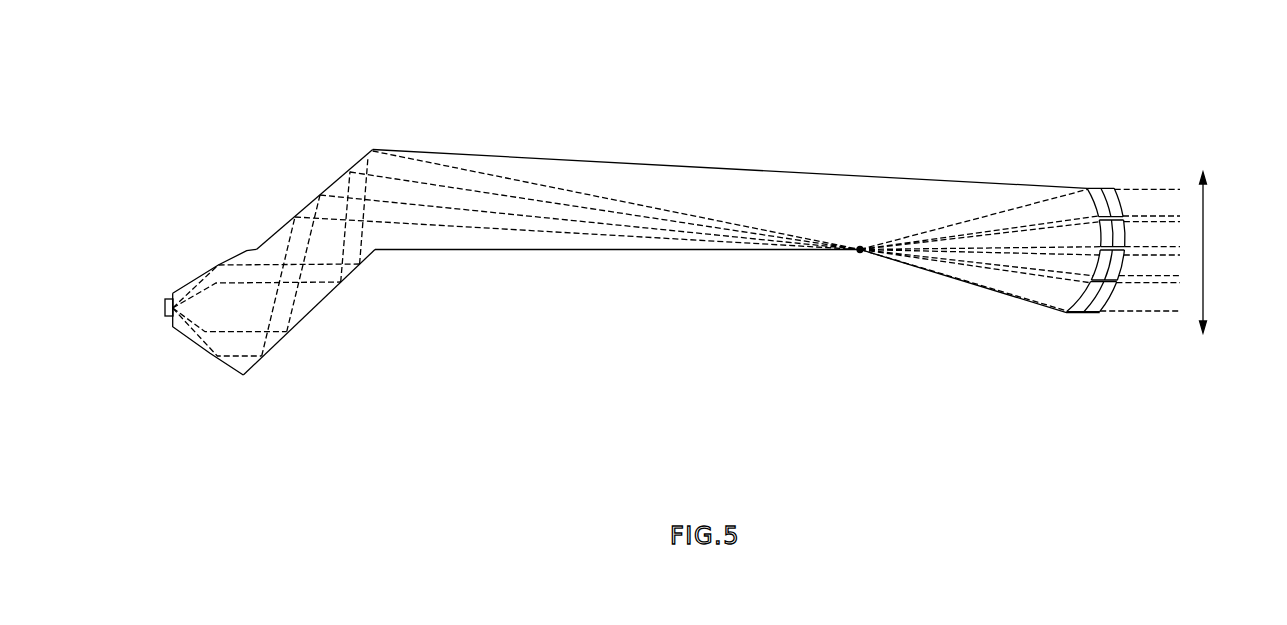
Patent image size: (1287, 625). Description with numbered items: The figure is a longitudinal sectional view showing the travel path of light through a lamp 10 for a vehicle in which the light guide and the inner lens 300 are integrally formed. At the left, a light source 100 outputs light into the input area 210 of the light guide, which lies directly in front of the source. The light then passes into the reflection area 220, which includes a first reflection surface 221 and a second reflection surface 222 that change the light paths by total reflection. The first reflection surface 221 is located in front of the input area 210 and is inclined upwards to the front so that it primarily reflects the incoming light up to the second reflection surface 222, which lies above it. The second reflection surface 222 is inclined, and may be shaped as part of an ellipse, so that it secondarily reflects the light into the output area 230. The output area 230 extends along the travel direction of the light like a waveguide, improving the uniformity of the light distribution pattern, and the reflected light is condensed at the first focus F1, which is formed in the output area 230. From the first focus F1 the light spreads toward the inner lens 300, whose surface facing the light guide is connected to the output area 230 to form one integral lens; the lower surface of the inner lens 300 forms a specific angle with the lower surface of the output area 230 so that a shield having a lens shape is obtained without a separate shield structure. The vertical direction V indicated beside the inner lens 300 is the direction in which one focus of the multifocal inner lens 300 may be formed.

The lamp for a vehicle 10 is at (1033, 47).
The light source 100 is at (172, 318).
The input area 210 is at (224, 344).
The reflection area 220 is at (332, 233).
The first reflection surface 221 is at (350, 283).
The second reflection surface 222 is at (300, 206).
The output area 230 is at (549, 228).
The inner lens 300 is at (1082, 237).
The first focus F1 is at (860, 254).
The vertical direction V is at (1203, 255).